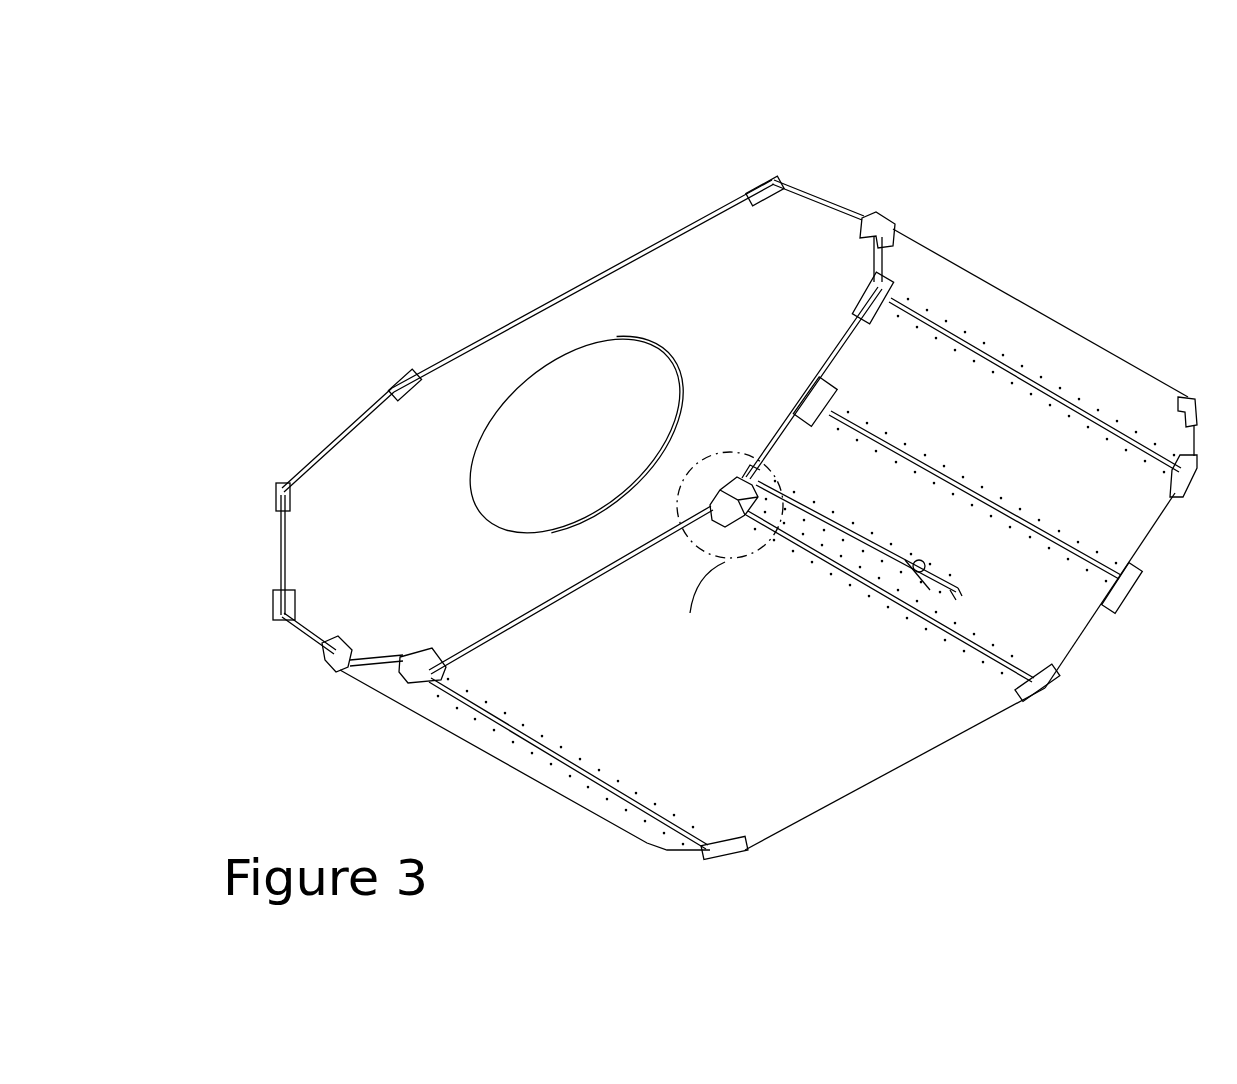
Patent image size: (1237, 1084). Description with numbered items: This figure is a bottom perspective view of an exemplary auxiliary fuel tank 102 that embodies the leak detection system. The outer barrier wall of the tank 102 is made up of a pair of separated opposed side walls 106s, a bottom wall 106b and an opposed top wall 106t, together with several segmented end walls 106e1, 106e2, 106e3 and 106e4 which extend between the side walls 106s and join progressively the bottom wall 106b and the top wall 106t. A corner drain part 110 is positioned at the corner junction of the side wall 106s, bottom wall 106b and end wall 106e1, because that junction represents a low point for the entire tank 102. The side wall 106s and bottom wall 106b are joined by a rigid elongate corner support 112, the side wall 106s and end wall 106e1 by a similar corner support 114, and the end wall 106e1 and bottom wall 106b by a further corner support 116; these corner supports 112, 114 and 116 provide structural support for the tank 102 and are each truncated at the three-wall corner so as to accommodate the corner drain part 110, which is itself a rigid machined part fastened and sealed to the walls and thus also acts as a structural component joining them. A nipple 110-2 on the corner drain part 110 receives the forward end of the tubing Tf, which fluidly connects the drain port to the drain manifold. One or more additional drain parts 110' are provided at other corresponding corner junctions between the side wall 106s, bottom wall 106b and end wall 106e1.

The auxiliary fuel tank 102 is at (977, 140).
The top wall 106t is at (567, 292).
The side wall 106s is at (770, 296).
The bottom wall 106b is at (753, 789).
The end wall 106e1 is at (517, 753).
The end wall 106e2 is at (1107, 497).
The end wall 106e3 is at (1060, 353).
The end wall 106e4 is at (826, 203).
The corner drain part 110 is at (650, 518).
The additional drain part 110' is at (745, 758).
The nipple 110-2 is at (750, 477).
The corner support 112 is at (538, 622).
The corner support 114 is at (770, 475).
The corner support 116 is at (852, 583).
The tubing Tf is at (921, 580).